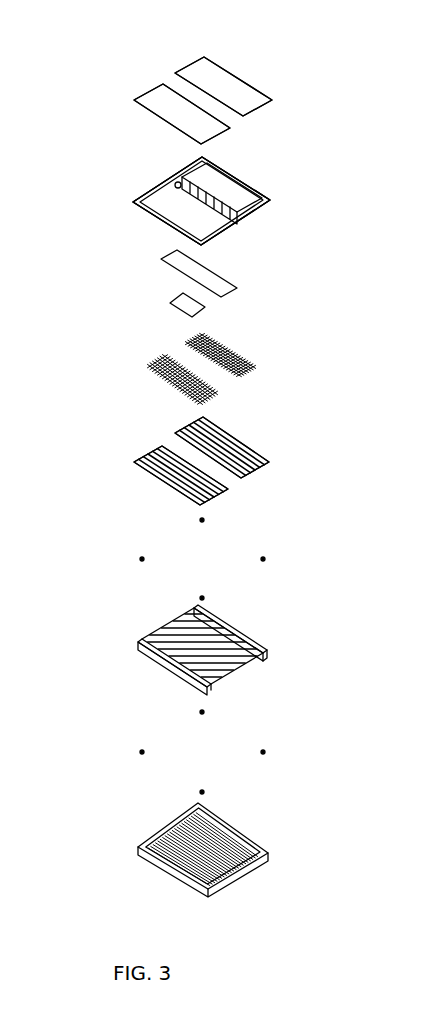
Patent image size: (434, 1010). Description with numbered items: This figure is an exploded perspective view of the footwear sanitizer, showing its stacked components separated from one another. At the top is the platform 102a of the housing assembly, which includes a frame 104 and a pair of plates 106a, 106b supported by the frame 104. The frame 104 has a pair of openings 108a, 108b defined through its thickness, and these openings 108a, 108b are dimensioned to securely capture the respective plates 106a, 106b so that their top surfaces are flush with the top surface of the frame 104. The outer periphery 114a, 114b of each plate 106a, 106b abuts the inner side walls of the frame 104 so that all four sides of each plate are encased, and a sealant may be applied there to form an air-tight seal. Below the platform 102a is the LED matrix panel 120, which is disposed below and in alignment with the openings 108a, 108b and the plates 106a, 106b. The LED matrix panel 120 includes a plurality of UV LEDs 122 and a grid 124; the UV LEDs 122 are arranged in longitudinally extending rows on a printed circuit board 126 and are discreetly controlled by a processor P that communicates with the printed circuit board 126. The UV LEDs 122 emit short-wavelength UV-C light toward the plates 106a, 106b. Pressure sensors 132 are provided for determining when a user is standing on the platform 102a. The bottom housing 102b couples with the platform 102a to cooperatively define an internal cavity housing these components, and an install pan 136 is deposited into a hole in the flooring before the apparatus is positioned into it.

The top housing or platform 102a is at (90, 100).
The plate 106a is at (163, 97).
The plate 106b is at (202, 75).
The outer periphery 114a is at (157, 85).
The outer periphery 114b is at (245, 80).
The frame 104 is at (247, 171).
The opening 108a is at (168, 202).
The opening 108b is at (237, 200).
The processor P is at (226, 282).
The LED matrix panel 120 is at (90, 343).
The grid 124 is at (220, 392).
The ultraviolet light LEDs 122 is at (167, 448).
The printed circuit board 126 is at (220, 497).
The pressure sensors 132 is at (200, 598).
The bottom housing 102b is at (163, 670).
The install pan 136 is at (167, 873).